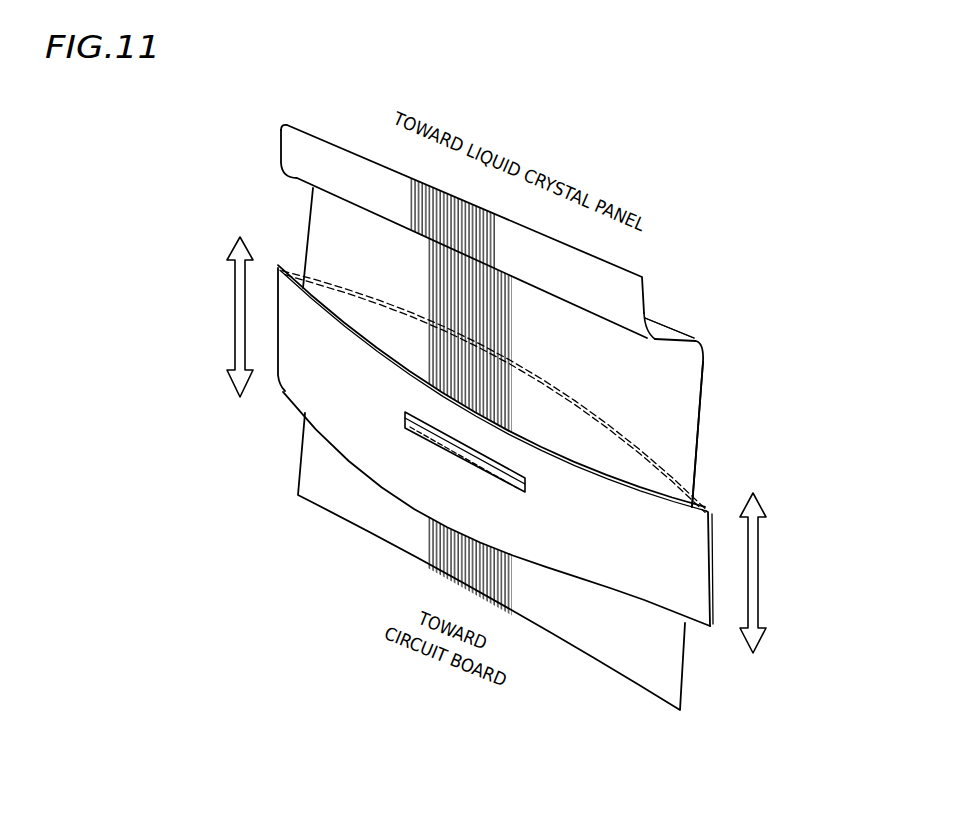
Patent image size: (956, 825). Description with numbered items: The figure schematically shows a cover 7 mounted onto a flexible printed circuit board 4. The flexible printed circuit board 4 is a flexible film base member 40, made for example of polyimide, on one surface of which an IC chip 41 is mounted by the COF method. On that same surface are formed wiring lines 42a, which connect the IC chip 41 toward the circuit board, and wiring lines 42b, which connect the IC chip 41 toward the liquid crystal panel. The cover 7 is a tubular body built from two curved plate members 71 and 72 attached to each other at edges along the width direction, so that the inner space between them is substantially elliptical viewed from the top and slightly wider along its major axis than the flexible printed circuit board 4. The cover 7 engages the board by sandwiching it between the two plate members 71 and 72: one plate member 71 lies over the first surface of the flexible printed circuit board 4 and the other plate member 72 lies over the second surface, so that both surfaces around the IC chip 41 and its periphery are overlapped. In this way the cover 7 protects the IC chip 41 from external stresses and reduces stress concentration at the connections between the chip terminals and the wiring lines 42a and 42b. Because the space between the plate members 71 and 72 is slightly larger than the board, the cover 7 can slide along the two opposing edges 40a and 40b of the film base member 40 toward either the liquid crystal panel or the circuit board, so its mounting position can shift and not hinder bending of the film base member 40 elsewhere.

The flexible printed circuit board 4 is at (713, 338).
The film base member 40 is at (625, 660).
The edge of the film base member 40a is at (705, 374).
The edge of the film base member 40b is at (303, 218).
The IC chip 41 is at (525, 490).
The wiring lines 42a is at (413, 534).
The wiring lines 42b is at (528, 347).
The cover 7 is at (290, 406).
The plate member 71 is at (663, 594).
The plate member 72 is at (645, 450).